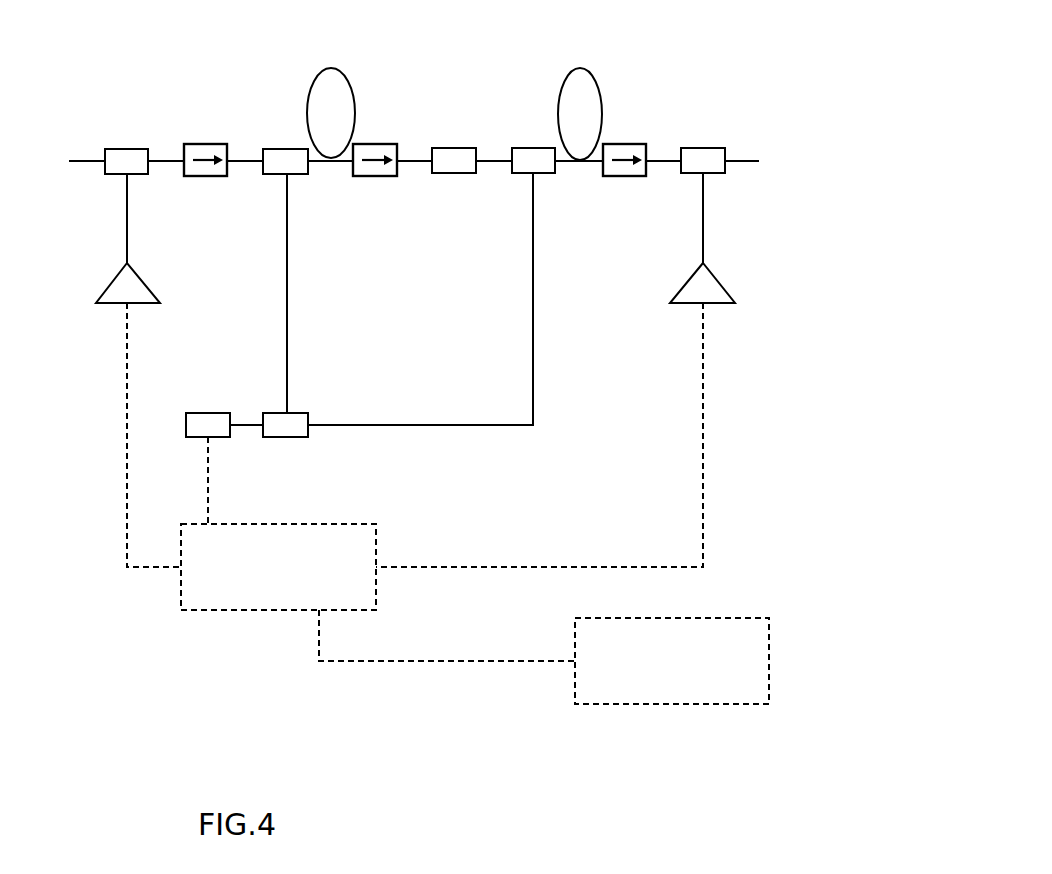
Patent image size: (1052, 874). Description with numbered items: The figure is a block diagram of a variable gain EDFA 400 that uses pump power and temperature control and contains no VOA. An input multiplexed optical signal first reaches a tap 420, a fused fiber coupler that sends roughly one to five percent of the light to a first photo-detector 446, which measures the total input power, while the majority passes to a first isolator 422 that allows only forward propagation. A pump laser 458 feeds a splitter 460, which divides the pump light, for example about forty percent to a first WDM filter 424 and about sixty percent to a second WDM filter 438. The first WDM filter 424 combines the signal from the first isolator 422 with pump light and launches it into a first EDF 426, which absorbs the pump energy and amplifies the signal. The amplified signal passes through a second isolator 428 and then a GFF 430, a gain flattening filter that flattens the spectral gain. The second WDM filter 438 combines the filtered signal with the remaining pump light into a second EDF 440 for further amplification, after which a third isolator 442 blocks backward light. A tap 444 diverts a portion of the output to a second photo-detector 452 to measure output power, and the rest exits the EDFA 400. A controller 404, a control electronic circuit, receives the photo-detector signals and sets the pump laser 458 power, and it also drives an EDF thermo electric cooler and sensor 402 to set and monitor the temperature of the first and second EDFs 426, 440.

The variable gain EDFA 400 is at (118, 70).
The EDF thermo electric cooler and sensor 402 is at (769, 632).
The controller 404 is at (376, 530).
The tap 420 is at (148, 150).
The first isolator 422 is at (227, 146).
The first WDM filter 424 is at (274, 174).
The first EDF 426 is at (352, 96).
The second isolator 428 is at (397, 146).
The GFF 430 is at (476, 149).
The second WDM filter 438 is at (512, 174).
The second EDF 440 is at (598, 92).
The third isolator 442 is at (646, 146).
The tap 444 is at (688, 173).
The first photo-detector 446 is at (141, 281).
The second photo-detector 452 is at (717, 280).
The pump laser 458 is at (208, 413).
The splitter 460 is at (303, 413).